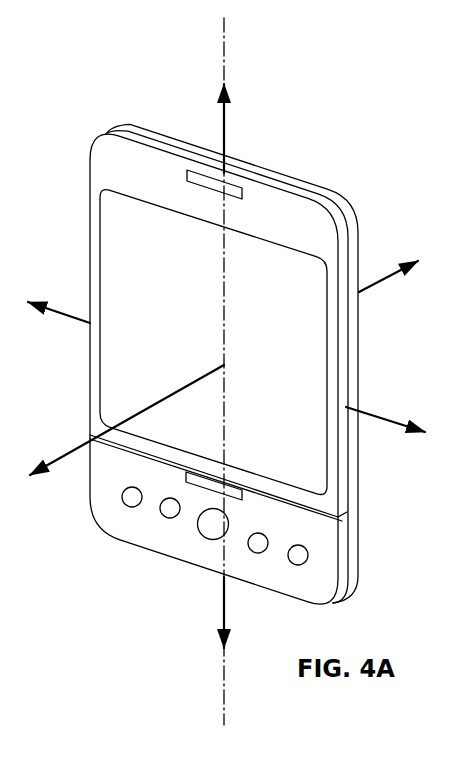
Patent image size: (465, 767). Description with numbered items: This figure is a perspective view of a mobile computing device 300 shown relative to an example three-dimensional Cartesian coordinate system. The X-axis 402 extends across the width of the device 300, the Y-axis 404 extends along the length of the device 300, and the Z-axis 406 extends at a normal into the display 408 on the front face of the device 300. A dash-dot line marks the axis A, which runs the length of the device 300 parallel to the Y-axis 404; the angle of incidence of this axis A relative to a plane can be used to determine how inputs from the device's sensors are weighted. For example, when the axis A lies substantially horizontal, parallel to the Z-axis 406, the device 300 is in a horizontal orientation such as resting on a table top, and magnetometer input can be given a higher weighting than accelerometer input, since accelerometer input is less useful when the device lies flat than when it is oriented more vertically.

The axis A is at (225, 62).
The device 300 is at (311, 183).
The X-axis 402 is at (382, 421).
The Y-axis 404 is at (226, 115).
The Z-axis 406 is at (60, 462).
The display 408 is at (209, 330).